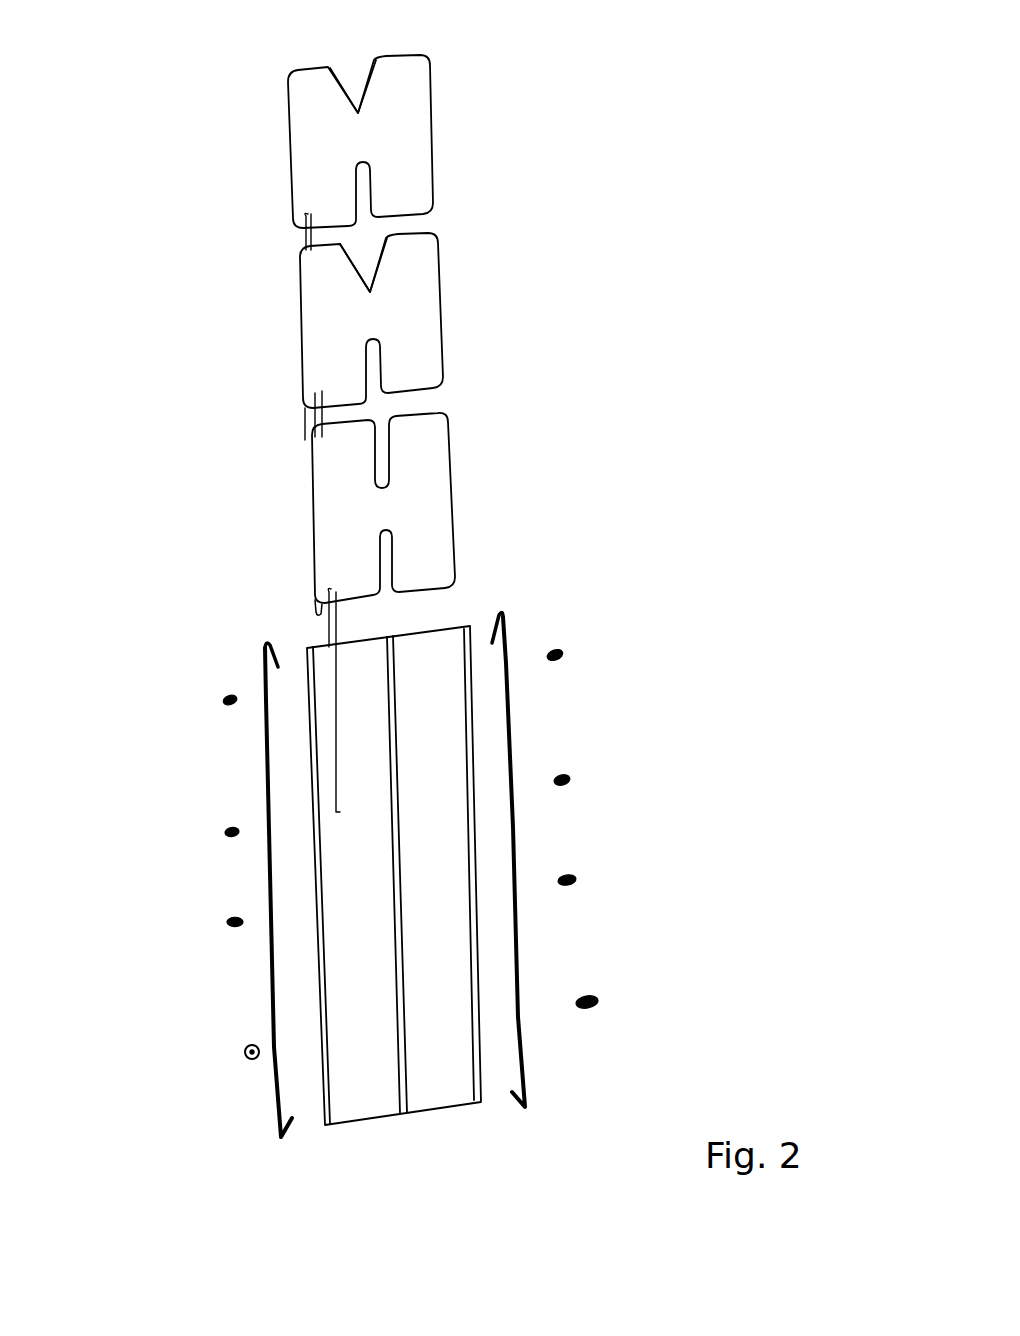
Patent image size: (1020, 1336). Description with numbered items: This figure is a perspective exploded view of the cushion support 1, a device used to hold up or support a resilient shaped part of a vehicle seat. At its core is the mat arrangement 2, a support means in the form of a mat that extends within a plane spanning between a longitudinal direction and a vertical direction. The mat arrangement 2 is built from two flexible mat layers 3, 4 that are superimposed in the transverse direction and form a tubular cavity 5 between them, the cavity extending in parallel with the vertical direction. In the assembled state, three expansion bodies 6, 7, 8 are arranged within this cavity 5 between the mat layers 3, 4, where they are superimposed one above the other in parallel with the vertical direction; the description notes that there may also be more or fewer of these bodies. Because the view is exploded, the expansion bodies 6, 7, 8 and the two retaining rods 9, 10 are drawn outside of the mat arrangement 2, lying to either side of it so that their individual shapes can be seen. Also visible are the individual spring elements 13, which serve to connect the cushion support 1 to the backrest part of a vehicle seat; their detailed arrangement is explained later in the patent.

The cushion support 1 is at (675, 340).
The mat arrangement 2 is at (612, 542).
The flexible mat layer 3 is at (437, 1082).
The flexible mat layer 4 is at (370, 1082).
The tubular cavity 5 is at (430, 620).
The expansion body 6 is at (453, 497).
The expansion body 7 is at (445, 308).
The expansion body 8 is at (433, 131).
The retaining rod 9 is at (265, 767).
The retaining rod 10 is at (515, 728).
The spring element 13 is at (224, 698).